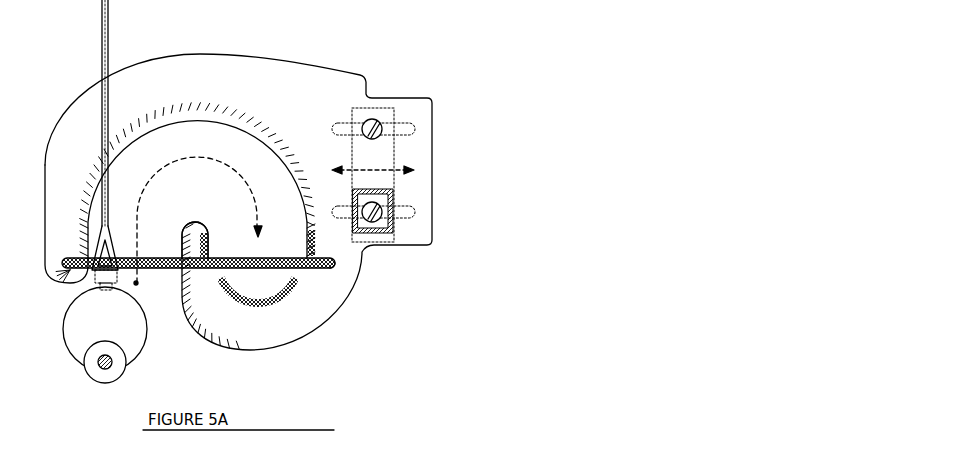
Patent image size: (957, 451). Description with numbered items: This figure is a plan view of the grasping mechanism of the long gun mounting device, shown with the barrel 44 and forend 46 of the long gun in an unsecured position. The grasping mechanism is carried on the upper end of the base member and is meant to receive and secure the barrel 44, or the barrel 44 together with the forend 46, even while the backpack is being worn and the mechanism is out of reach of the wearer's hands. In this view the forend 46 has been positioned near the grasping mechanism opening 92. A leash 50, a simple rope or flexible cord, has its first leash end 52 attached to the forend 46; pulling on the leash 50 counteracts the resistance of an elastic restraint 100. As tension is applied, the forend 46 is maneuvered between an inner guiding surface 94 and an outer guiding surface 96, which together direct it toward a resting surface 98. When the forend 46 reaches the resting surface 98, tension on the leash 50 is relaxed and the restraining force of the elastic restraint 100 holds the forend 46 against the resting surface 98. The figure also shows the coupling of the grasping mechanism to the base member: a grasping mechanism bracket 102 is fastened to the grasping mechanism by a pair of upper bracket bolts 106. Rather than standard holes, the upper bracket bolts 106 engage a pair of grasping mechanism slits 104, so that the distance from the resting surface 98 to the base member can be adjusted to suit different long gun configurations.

The barrel 44 is at (88, 376).
The forend 46 is at (66, 346).
The leash 50 is at (101, 40).
The first leash end 52 is at (97, 250).
The grasping mechanism opening 92 is at (138, 285).
The inner guiding surface 94 is at (88, 181).
The outer guiding surface 96 is at (200, 223).
The resting surface 98 is at (323, 260).
The elastic restraint 100 is at (278, 262).
The grasping mechanism bracket 102 is at (395, 156).
The grasping mechanism slits 104 is at (415, 129).
The upper bracket bolts 106 is at (376, 121).